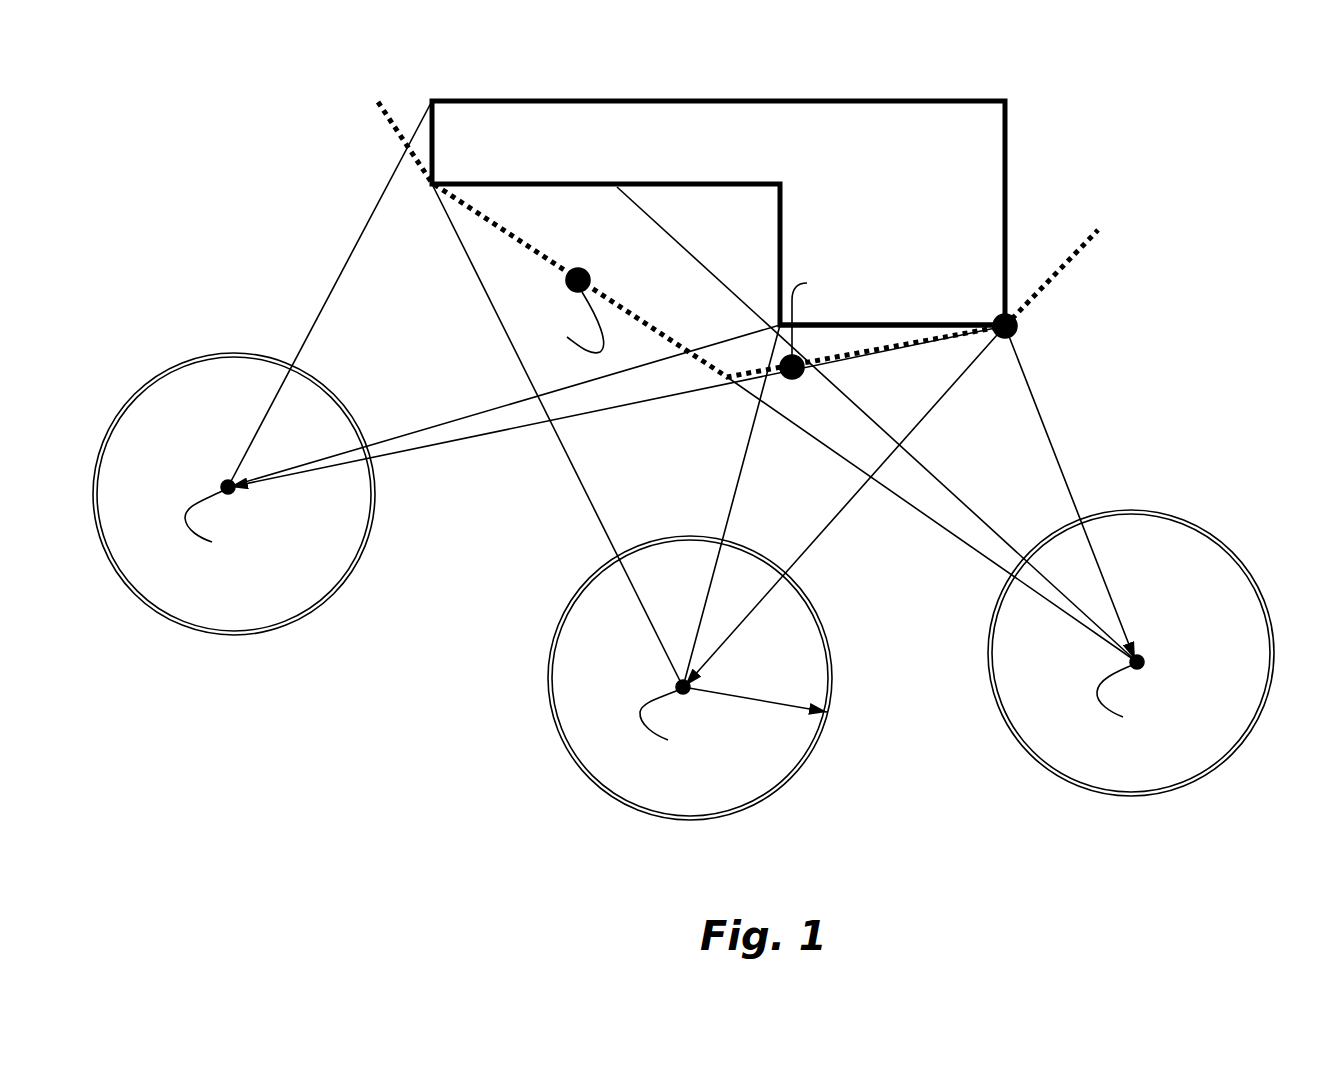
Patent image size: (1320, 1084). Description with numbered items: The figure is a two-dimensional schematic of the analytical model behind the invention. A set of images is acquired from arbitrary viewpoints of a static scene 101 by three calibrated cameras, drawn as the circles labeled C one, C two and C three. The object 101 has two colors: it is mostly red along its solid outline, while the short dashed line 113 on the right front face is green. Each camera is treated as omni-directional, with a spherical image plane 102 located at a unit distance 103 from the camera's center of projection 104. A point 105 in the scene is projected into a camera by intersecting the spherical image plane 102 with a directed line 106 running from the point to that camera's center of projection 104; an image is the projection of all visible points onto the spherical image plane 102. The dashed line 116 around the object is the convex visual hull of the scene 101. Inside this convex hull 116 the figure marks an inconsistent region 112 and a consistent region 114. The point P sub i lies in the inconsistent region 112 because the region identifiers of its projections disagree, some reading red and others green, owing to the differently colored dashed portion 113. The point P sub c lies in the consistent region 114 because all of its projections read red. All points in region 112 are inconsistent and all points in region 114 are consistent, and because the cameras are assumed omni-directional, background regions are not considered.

The static scene 101 is at (803, 101).
The spherical image plane 102 is at (345, 585).
The unit distance 103 is at (760, 697).
The center of projection 104 is at (1145, 664).
The point 105 is at (1017, 332).
The directed line 106 is at (1057, 463).
The inconsistent region 112 is at (736, 362).
The dashed line portion 113 is at (833, 323).
The consistent region 114 is at (618, 245).
The convex visual hull 116 is at (1058, 272).